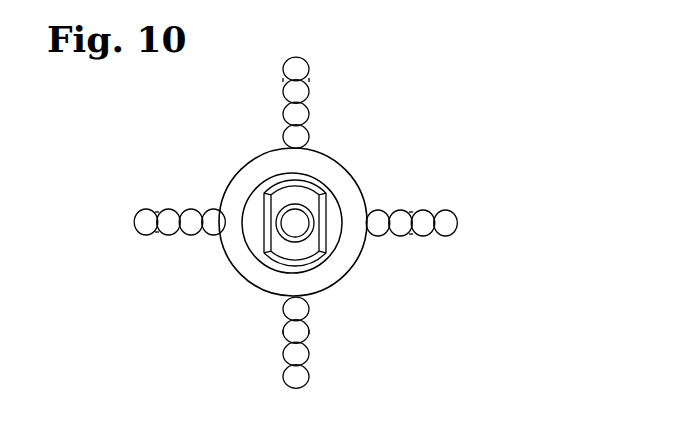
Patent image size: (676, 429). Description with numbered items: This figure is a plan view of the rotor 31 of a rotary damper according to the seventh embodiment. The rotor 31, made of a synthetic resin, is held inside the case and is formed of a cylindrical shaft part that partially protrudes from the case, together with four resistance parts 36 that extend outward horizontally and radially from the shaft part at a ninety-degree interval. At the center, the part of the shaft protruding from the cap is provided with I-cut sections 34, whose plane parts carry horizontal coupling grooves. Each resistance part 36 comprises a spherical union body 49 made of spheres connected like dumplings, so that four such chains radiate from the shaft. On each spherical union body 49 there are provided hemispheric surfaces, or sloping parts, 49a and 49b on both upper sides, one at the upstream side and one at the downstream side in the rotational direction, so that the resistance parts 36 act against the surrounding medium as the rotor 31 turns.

The rotor 31 is at (236, 157).
The I-cut sections 34 is at (258, 237).
The spherical union bodies 49 is at (313, 218).
The resistance parts 36 is at (258, 222).
The hemispheric surface (sloping part) 49a is at (309, 78).
The hemispheric surface (sloping part) 49b is at (283, 76).